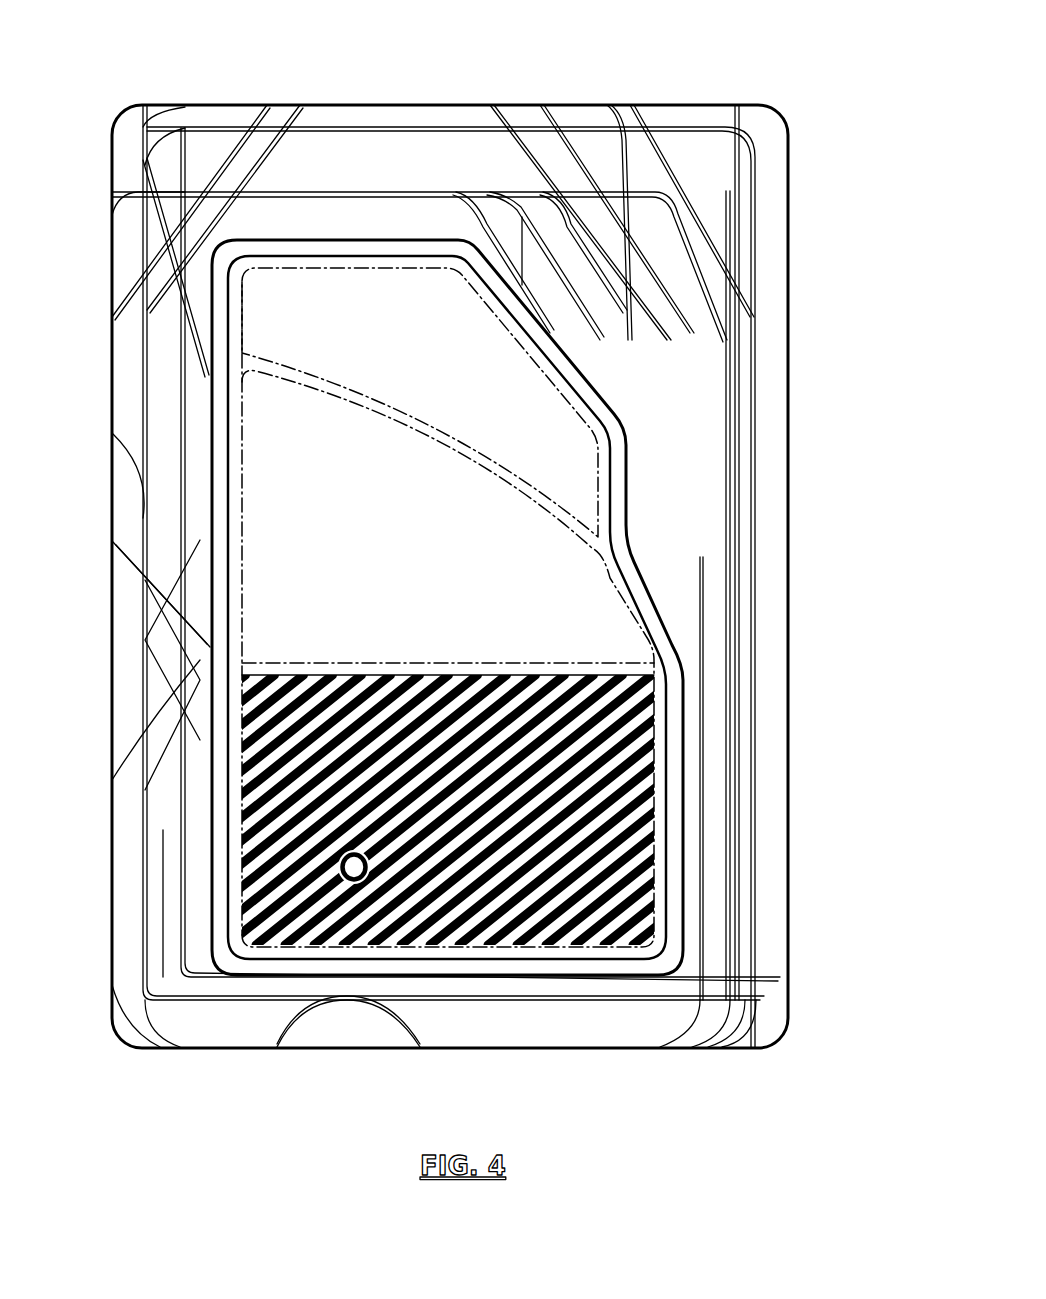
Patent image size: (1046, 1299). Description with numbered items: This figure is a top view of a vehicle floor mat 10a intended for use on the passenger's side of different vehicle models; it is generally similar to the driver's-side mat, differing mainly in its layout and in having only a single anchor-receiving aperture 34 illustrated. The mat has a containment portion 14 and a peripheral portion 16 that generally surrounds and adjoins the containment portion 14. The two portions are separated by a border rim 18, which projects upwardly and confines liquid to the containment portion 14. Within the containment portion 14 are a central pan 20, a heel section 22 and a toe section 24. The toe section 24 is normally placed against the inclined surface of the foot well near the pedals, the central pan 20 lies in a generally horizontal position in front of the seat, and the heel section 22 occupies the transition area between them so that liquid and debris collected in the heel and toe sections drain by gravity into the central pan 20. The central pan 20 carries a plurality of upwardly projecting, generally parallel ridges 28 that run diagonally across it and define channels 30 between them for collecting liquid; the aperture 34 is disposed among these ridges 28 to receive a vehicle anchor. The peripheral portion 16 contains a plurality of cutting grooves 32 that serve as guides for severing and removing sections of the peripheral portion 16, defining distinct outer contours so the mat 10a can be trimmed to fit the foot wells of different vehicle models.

The vehicle floor mat 10a is at (706, 72).
The containment portion 14 is at (540, 396).
The peripheral portion 16 is at (733, 178).
The border rim 18 is at (615, 440).
The central pan 20 is at (657, 750).
The heel section 22 is at (617, 597).
The toe section 24 is at (600, 487).
The ridges 28 is at (655, 788).
The channels 30 is at (650, 833).
The cutting grooves 32 is at (317, 192).
The aperture 34 is at (346, 880).